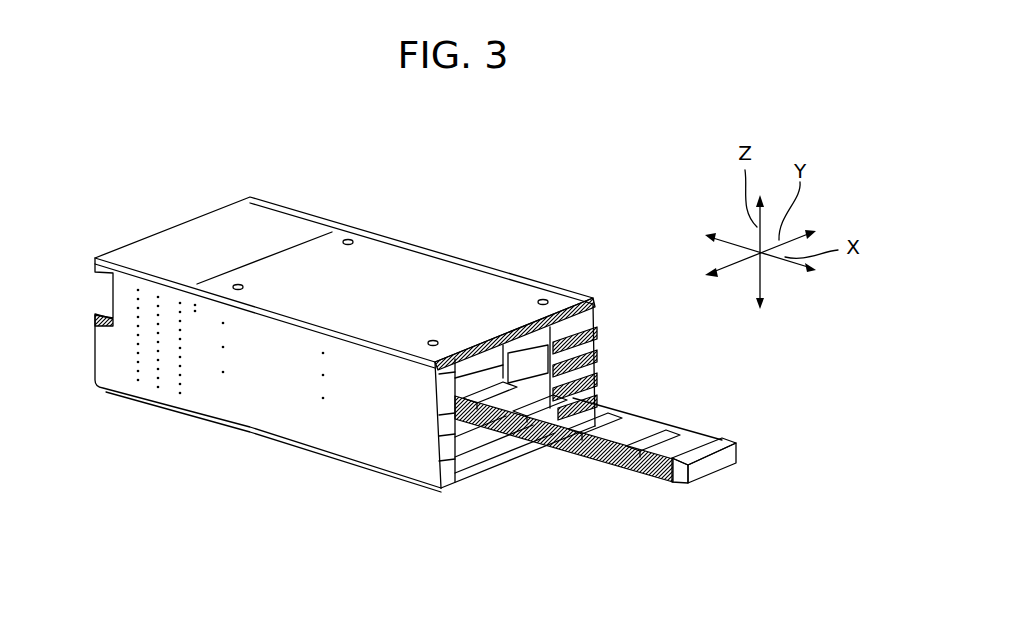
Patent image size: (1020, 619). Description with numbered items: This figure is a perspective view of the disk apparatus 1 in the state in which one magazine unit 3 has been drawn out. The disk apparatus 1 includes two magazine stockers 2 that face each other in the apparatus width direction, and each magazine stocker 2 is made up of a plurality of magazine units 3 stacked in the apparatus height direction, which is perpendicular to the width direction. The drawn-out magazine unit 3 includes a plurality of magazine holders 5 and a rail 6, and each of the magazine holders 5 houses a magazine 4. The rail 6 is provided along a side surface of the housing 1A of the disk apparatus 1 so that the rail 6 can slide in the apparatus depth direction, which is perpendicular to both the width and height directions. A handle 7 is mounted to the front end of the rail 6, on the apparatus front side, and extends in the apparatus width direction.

The disk apparatus 1 is at (430, 276).
The housing 1A is at (285, 407).
The magazine stocker 2 is at (667, 365).
The magazine unit 3 is at (598, 324).
The magazine 4 is at (595, 467).
The magazine holder 5 is at (487, 417).
The rail 6 is at (601, 448).
The handle 7 is at (708, 468).